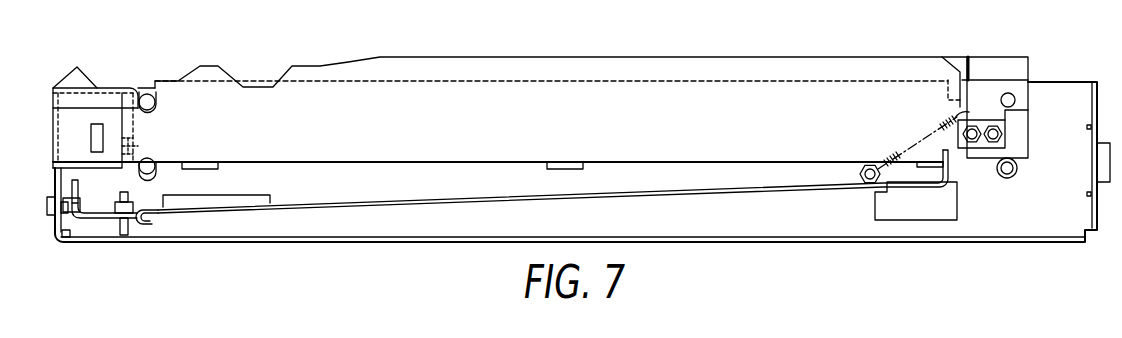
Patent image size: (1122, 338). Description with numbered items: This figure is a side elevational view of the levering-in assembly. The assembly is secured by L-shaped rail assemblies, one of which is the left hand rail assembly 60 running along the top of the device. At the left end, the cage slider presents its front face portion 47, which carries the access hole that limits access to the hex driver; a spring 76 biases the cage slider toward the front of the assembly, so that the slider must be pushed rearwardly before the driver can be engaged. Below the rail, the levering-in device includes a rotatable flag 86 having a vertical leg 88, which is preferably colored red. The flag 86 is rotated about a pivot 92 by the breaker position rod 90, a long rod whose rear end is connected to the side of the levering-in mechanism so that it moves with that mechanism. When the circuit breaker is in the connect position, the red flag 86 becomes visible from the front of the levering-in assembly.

The front face portion 47 is at (53, 112).
The left hand L-shaped rail assembly 60 is at (466, 57).
The spring 76 is at (903, 137).
The rotatable flag 86 is at (98, 221).
The vertical leg 88 is at (72, 192).
The breaker position rod 90 is at (556, 200).
The pivot 92 is at (131, 240).